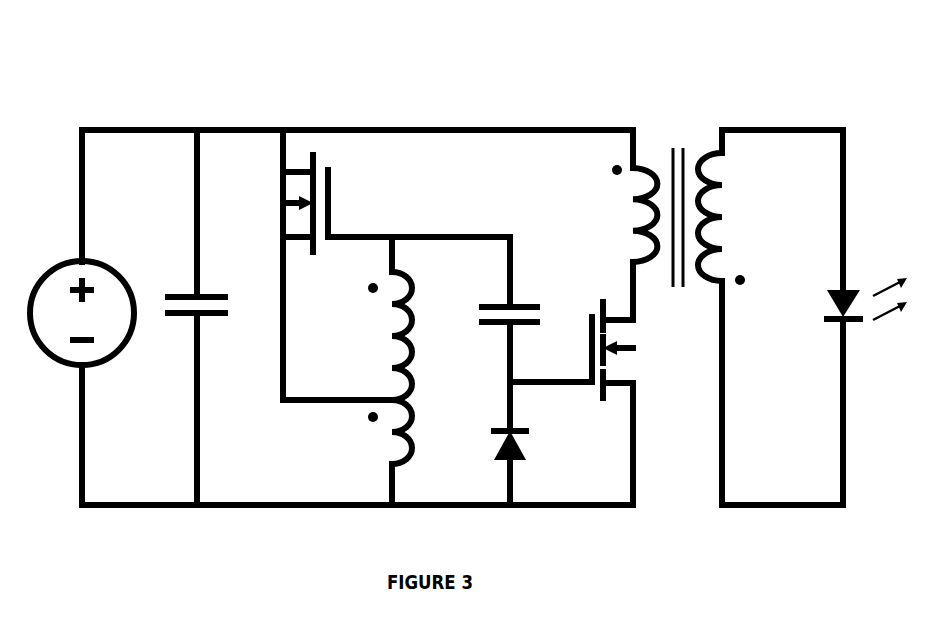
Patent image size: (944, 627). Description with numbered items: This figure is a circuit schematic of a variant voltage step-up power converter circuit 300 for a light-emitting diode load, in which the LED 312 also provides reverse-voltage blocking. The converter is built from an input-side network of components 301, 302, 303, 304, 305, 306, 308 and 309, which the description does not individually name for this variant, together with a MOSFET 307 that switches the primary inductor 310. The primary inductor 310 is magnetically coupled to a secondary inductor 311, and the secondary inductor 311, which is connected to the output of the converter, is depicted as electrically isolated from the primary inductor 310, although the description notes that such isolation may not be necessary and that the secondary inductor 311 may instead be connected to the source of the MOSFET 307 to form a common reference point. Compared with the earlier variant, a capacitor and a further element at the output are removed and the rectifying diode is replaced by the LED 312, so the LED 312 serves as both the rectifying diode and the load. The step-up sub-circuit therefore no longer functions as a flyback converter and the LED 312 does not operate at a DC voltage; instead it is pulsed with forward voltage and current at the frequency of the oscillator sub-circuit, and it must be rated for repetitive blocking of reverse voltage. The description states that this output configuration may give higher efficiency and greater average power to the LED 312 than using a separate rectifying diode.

The voltage step-up power converter circuit 300 is at (92, 68).
The DC voltage source 301 is at (83, 329).
The input capacitor 302 is at (207, 317).
The first switching transistor 303 is at (282, 203).
The tapped inductor 304 is at (415, 368).
The capacitor 305 is at (522, 299).
The diode 306 is at (494, 461).
The MOSFET 307 is at (638, 350).
The gate connection of second transistor 308 is at (551, 368).
The transformer core 309 is at (682, 232).
The primary inductor 310 is at (622, 213).
The secondary inductor 311 is at (736, 219).
The LED 312 is at (845, 302).